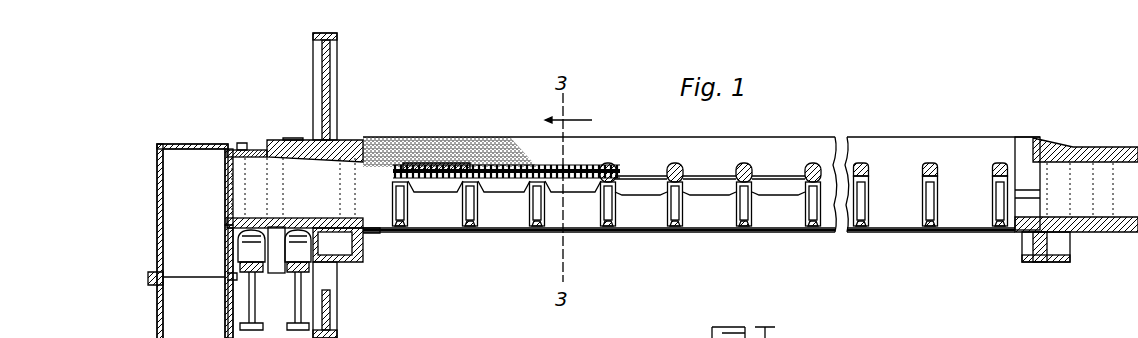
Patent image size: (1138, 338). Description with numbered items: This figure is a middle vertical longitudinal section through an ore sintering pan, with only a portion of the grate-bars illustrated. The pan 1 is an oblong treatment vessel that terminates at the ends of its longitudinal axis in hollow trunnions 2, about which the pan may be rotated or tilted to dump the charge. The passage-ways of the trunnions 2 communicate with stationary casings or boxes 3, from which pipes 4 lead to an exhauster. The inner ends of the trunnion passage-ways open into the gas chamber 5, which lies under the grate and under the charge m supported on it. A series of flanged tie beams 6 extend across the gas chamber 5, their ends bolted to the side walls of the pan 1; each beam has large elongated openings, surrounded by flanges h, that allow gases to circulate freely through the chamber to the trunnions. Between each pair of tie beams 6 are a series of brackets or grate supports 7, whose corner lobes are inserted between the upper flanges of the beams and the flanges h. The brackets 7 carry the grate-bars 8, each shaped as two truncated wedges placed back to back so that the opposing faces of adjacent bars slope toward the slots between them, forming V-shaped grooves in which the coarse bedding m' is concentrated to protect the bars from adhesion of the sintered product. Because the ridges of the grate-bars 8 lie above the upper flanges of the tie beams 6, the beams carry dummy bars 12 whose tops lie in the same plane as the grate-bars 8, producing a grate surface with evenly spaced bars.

The pan 1 is at (662, 132).
The hollow trunnions 2 is at (682, 200).
The stationary casings or boxes 3 is at (190, 241).
The pipes 4 is at (194, 307).
The gas chamber 5 is at (645, 218).
The flanged tie beams 6 is at (470, 230).
The brackets or grate supports 7 is at (510, 190).
The grate-bars 8 is at (446, 175).
The dummy bars 12 is at (746, 163).
The flanges h is at (684, 182).
The charge m is at (450, 139).
The coarse bedding m' is at (451, 140).